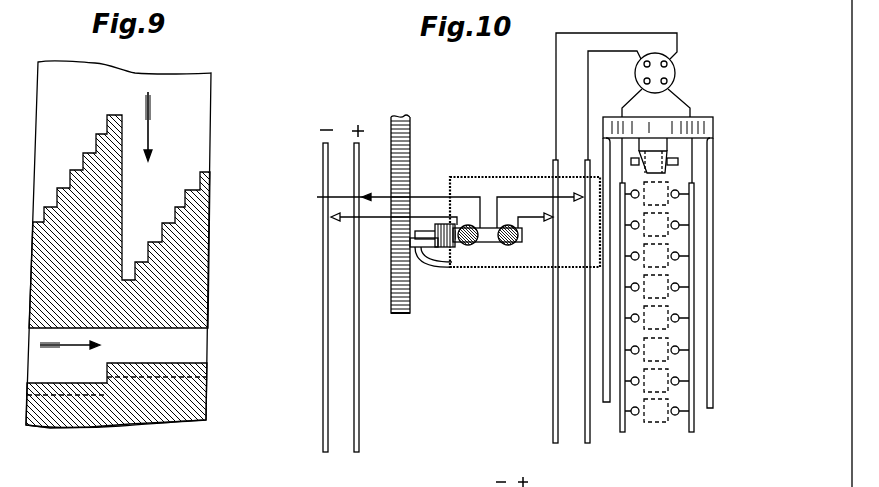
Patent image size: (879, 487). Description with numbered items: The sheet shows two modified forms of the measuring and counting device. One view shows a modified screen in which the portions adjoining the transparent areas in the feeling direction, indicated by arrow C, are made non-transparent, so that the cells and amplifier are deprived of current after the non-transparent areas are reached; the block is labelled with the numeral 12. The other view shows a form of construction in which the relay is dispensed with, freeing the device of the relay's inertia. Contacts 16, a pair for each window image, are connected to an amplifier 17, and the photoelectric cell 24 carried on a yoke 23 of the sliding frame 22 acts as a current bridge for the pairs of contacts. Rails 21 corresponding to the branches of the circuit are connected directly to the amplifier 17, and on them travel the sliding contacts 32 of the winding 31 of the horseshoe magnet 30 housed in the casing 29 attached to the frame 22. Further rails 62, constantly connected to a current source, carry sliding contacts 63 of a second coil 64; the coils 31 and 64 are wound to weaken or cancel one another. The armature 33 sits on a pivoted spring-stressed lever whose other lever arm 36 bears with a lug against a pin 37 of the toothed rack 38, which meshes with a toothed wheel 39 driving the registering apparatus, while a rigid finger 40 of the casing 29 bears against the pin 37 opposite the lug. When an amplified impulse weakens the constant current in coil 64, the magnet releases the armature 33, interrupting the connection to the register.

In FIG. 9, the stepped cam block 12 is at (202, 118).
In FIG. 10, the contacts 16 is at (680, 256).
In FIG. 10, the amplifier 17 is at (674, 76).
In FIG. 10, the circuit 21 is at (584, 376).
In FIG. 10, the frame 22 is at (709, 408).
In FIG. 10, the yoke 23 is at (675, 128).
In FIG. 10, the photoelectric cell 24 is at (668, 168).
In FIG. 10, the casing 29 is at (542, 177).
In FIG. 10, the horseshoe magnet 30 is at (510, 242).
In FIG. 10, the winding 31 is at (513, 243).
In FIG. 10, the sliding contacts 32 is at (550, 219).
In FIG. 10, the armature 33 is at (486, 230).
In FIG. 10, the lever arm 36 is at (423, 231).
In FIG. 10, the pin 37 is at (410, 242).
In FIG. 10, the toothed rack 38 is at (406, 117).
In FIG. 10, the toothed wheel 39 is at (396, 315).
In FIG. 10, the rigid finger 40 is at (434, 268).
In FIG. 10, the rails 62 is at (356, 310).
In FIG. 10, the sliding contacts 63 is at (332, 216).
In FIG. 10, the coil 64 is at (468, 243).